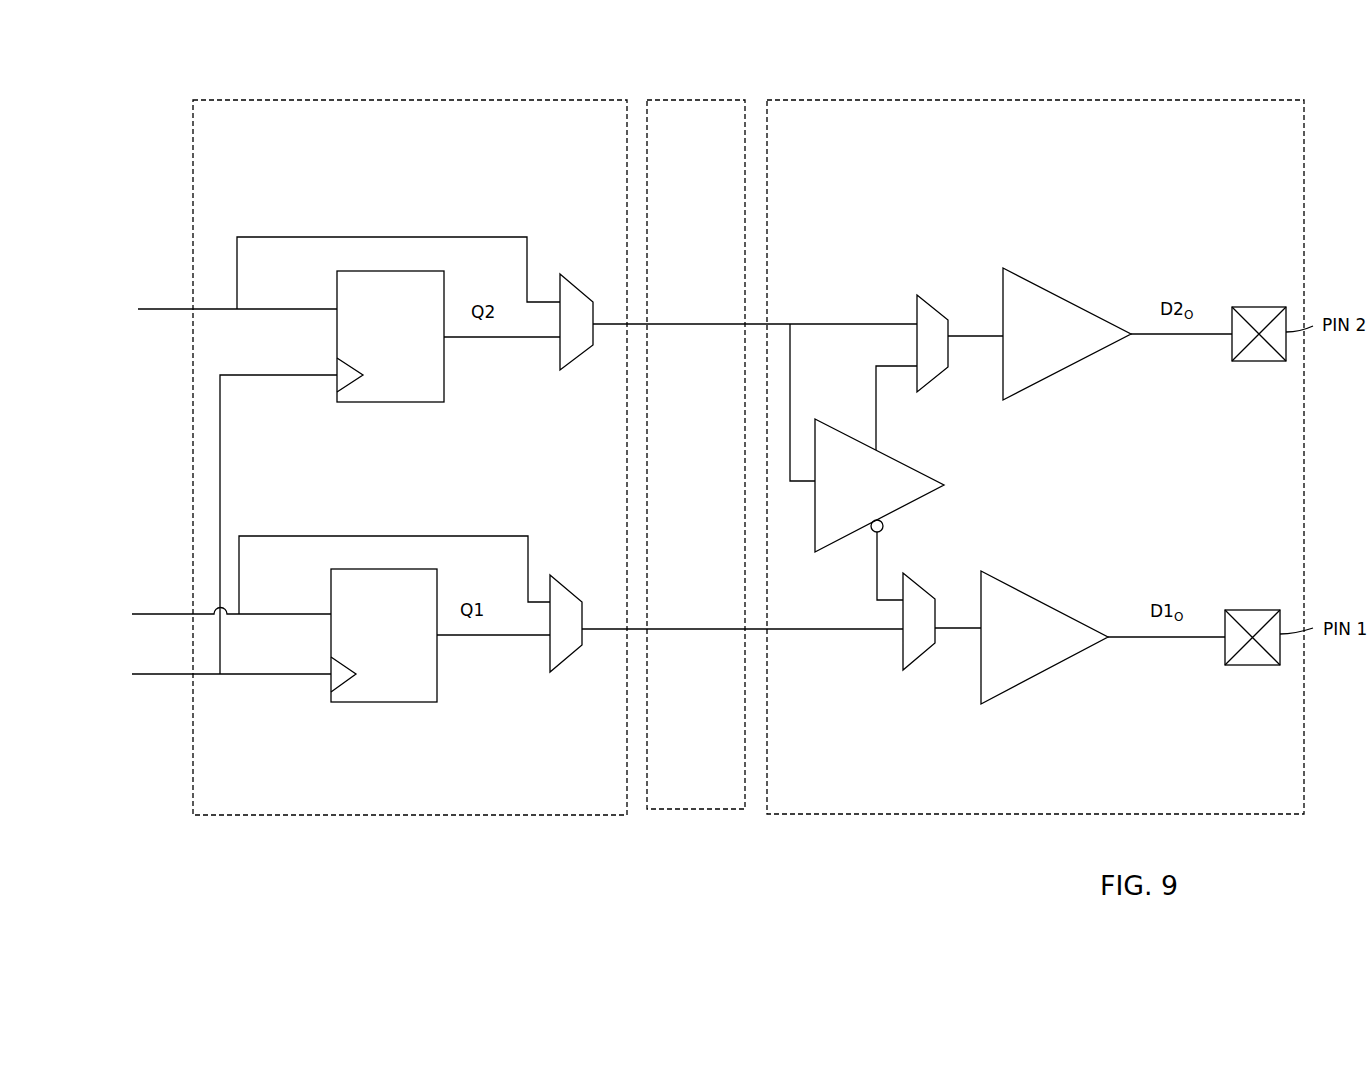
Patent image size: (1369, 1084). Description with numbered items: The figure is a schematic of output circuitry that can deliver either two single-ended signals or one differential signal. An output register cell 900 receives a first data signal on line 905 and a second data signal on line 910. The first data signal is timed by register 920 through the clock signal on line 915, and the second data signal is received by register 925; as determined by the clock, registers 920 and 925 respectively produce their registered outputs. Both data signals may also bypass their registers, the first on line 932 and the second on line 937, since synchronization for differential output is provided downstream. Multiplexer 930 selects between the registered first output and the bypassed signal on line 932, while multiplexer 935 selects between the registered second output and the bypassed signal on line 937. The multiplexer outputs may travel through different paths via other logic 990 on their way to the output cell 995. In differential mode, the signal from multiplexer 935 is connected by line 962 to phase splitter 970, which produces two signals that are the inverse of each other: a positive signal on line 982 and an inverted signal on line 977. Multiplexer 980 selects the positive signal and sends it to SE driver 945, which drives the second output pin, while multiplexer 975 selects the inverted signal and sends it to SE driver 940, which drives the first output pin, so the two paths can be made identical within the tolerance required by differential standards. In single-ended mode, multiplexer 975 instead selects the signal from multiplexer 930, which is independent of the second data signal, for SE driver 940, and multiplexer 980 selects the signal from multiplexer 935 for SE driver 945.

The output register cell 900 is at (410, 457).
The line 905 is at (157, 612).
The line 910 is at (165, 309).
The line 915 is at (132, 674).
The register 920 is at (384, 635).
The register 925 is at (390, 336).
The multiplexer 930 is at (560, 665).
The line 932 is at (365, 533).
The multiplexer 935 is at (582, 350).
The line 937 is at (308, 237).
The SE driver 940 is at (1038, 673).
The SE driver 945 is at (1003, 280).
The line 962 is at (790, 378).
The phase splitter 970 is at (923, 497).
The multiplexer 975 is at (918, 658).
The line 977 is at (878, 563).
The multiplexer 980 is at (920, 307).
The line 982 is at (875, 427).
The other logic 990 is at (696, 454).
The output cell 995 is at (1035, 457).